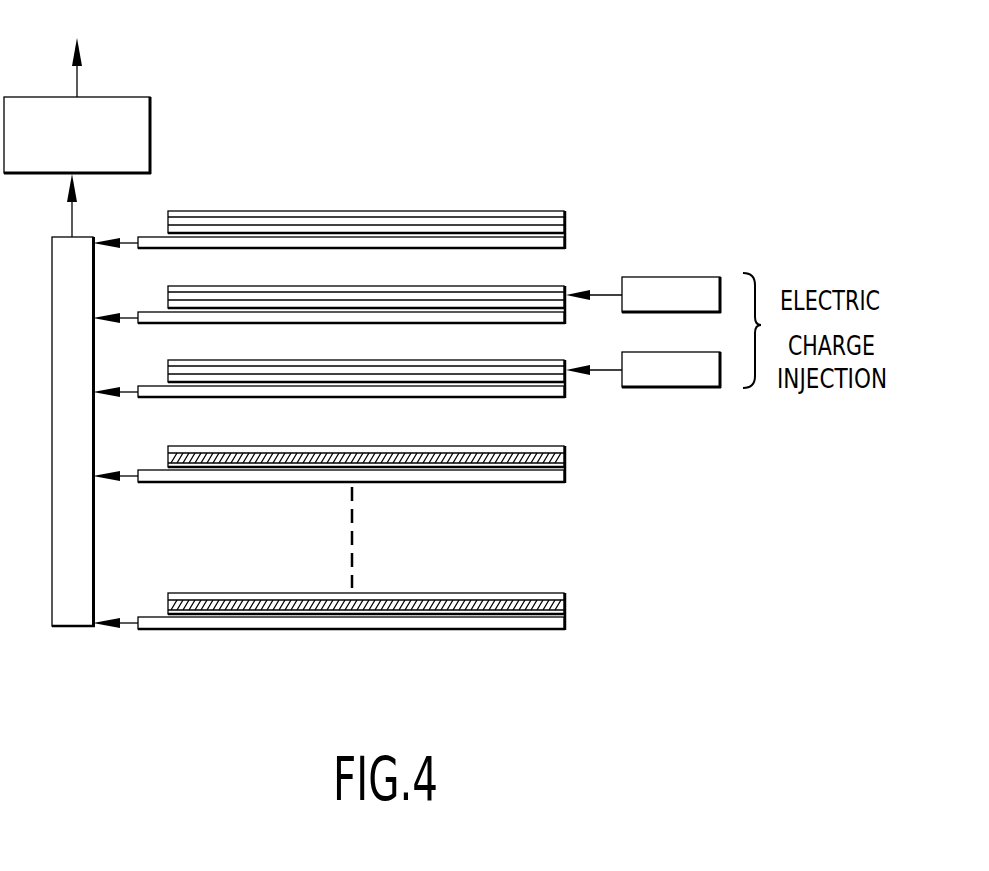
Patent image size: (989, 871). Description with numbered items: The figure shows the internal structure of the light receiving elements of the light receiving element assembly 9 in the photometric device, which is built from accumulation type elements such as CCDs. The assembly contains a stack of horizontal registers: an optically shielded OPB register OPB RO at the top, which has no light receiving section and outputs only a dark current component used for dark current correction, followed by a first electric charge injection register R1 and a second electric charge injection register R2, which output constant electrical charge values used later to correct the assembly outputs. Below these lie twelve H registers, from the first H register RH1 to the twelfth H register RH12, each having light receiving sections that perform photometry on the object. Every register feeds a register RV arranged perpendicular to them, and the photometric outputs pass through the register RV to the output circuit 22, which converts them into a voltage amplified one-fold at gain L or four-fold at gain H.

The output circuit 22 is at (152, 114).
The light receiving element assembly 9 is at (329, 369).
The register RV is at (75, 627).
The OPB register OPB RO is at (277, 210).
The first electric charge injection register R1 is at (349, 287).
The second electric charge injection register R2 is at (349, 362).
The H register RH1 is at (350, 446).
The H register RH12 is at (415, 593).